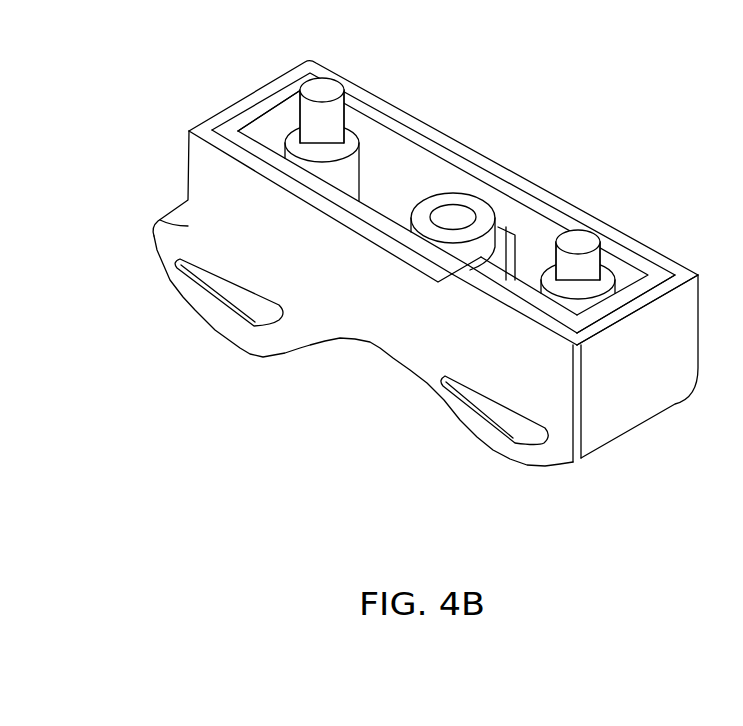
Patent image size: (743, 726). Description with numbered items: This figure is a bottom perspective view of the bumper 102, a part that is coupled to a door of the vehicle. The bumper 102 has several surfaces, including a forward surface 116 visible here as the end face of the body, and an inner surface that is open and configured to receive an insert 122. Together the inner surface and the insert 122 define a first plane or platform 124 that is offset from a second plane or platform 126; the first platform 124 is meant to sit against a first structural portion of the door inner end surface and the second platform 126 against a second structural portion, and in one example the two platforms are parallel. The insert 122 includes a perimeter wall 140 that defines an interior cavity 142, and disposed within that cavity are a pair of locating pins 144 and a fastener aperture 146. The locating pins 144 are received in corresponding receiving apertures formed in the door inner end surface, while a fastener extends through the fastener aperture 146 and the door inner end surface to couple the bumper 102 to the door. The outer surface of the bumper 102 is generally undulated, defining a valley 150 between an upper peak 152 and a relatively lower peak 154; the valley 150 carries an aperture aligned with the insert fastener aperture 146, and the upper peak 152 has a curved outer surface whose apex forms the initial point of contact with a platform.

The bumper 102 is at (588, 95).
The forward surface 116 is at (648, 355).
The insert 122 is at (410, 142).
The first platform 124 is at (461, 138).
The second platform 126 is at (637, 213).
The perimeter wall 140 is at (375, 146).
The interior cavity 142 is at (272, 132).
The locating pins 144 is at (335, 88).
The fastener aperture 146 is at (463, 215).
The valley 150 is at (379, 362).
The upper peak 152 is at (255, 378).
The lower peak 154 is at (517, 480).